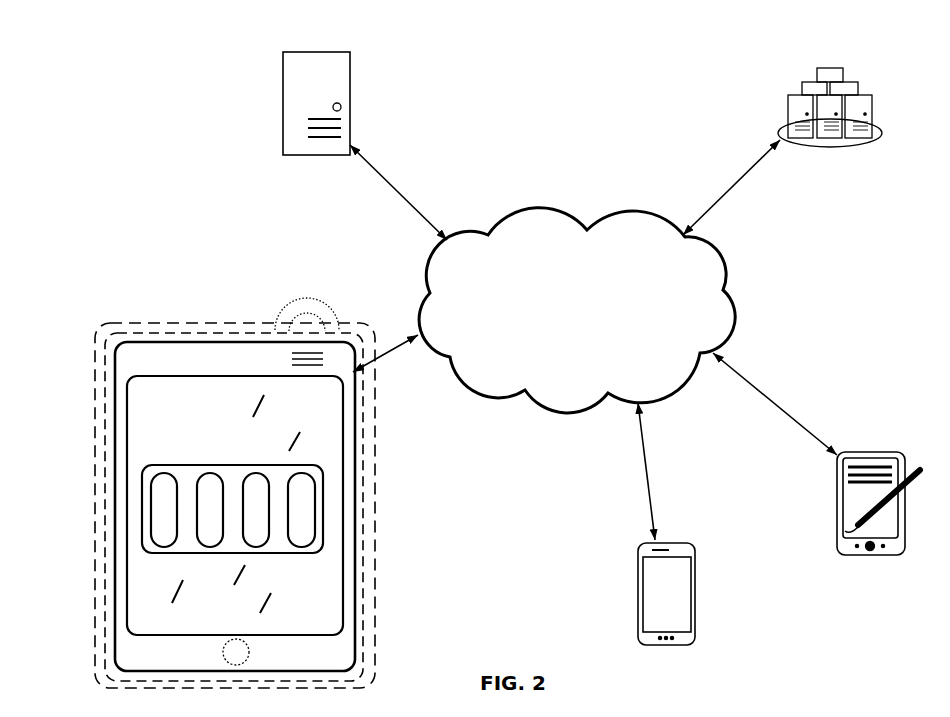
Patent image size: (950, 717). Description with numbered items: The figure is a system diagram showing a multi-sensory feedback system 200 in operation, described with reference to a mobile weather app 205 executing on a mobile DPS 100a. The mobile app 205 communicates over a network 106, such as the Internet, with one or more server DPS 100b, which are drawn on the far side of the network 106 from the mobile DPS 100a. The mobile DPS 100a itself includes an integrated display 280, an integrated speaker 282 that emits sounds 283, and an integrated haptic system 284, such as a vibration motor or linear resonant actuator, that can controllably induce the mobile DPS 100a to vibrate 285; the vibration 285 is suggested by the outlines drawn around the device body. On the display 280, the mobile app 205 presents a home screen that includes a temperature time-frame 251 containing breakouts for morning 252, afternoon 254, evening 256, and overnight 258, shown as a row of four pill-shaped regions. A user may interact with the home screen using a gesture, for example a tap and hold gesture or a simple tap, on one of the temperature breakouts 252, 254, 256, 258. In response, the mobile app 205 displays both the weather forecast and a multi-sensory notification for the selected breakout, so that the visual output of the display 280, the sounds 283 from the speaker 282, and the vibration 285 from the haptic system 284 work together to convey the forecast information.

The multi-sensory feedback system 200 is at (142, 147).
The network 106 is at (590, 319).
The mobile DPS 100a is at (462, 456).
The server DPS 100b is at (265, 100).
The mobile weather app 205 is at (237, 410).
The temperature time-frame 251 is at (234, 493).
The morning breakout 252 is at (160, 488).
The afternoon breakout 254 is at (205, 501).
The evening breakout 256 is at (245, 512).
The overnight breakout 258 is at (300, 502).
The integrated display 280 is at (327, 610).
The integrated speaker 282 is at (325, 360).
The sounds 283 is at (298, 300).
The integrated haptic system 284 is at (320, 655).
The vibration 285 is at (375, 543).